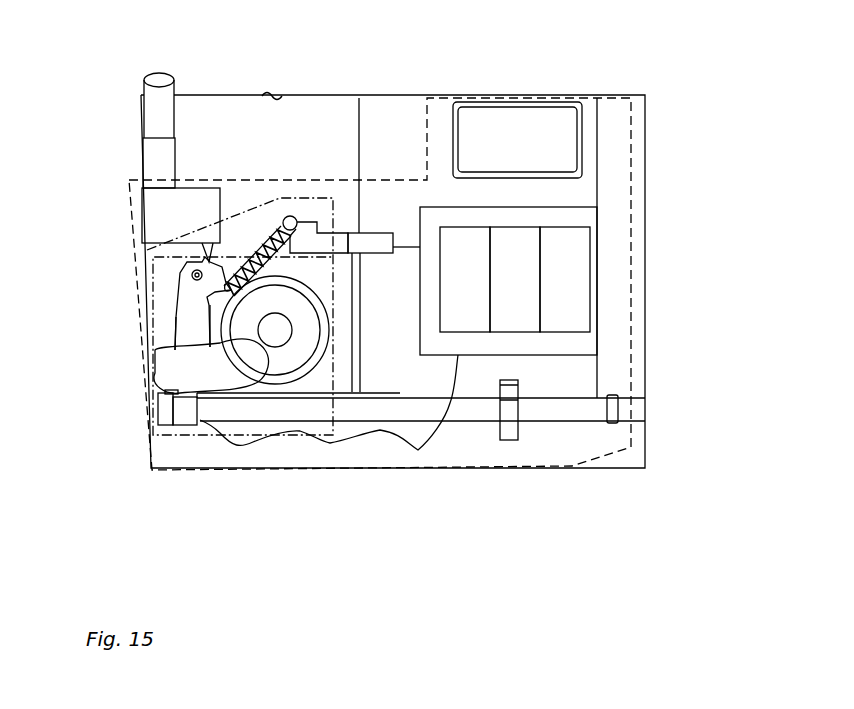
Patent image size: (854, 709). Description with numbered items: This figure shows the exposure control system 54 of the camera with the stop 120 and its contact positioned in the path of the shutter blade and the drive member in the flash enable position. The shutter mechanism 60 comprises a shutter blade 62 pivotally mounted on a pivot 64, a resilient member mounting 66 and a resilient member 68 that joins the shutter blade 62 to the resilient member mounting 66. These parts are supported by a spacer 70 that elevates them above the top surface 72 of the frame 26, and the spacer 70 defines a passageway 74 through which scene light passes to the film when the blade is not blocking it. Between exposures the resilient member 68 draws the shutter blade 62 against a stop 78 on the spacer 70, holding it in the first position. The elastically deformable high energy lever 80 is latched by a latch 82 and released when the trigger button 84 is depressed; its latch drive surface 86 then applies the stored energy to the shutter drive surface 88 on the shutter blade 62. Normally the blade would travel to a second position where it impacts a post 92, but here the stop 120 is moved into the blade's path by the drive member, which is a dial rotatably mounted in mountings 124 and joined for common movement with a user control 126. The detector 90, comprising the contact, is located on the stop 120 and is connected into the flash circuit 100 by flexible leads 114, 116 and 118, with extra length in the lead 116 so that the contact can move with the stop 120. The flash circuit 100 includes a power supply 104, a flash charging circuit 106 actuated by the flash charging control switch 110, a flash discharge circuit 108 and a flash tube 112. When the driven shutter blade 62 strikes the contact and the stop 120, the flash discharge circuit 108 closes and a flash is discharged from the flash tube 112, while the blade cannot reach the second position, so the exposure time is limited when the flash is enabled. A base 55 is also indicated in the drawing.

The frame 26 is at (645, 345).
The exposure control system 54 is at (738, 152).
The base plate 55 is at (380, 470).
The shutter mechanism 60 is at (253, 437).
The shutter blade 62 is at (211, 366).
The pivot 64 is at (180, 280).
The resilient member mounting 66 is at (300, 221).
The resilient member 68 is at (257, 222).
The spacer 70 is at (190, 264).
The top surface 72 is at (272, 93).
The passageway 74 is at (275, 330).
The stop 78 is at (180, 351).
The high energy lever 80 is at (181, 215).
The latch 82 is at (159, 163).
The trigger button 84 is at (159, 105).
The latch drive surface 86 is at (255, 243).
The shutter drive surface 88 is at (195, 262).
The detector 90 is at (197, 423).
The post 92 is at (150, 407).
The flash circuit 100 is at (612, 94).
The power supply 104 is at (565, 279).
The flash charging circuit 106 is at (515, 279).
The flash discharge circuit 108 is at (508, 281).
The flash charging control switch 110 is at (527, 433).
The flash tube 112 is at (517, 140).
The lead 114 is at (412, 243).
The lead 116 is at (460, 357).
The lead 118 is at (330, 452).
The stop 120 is at (187, 417).
The mounting 124 is at (150, 395).
The user control 126 is at (517, 433).